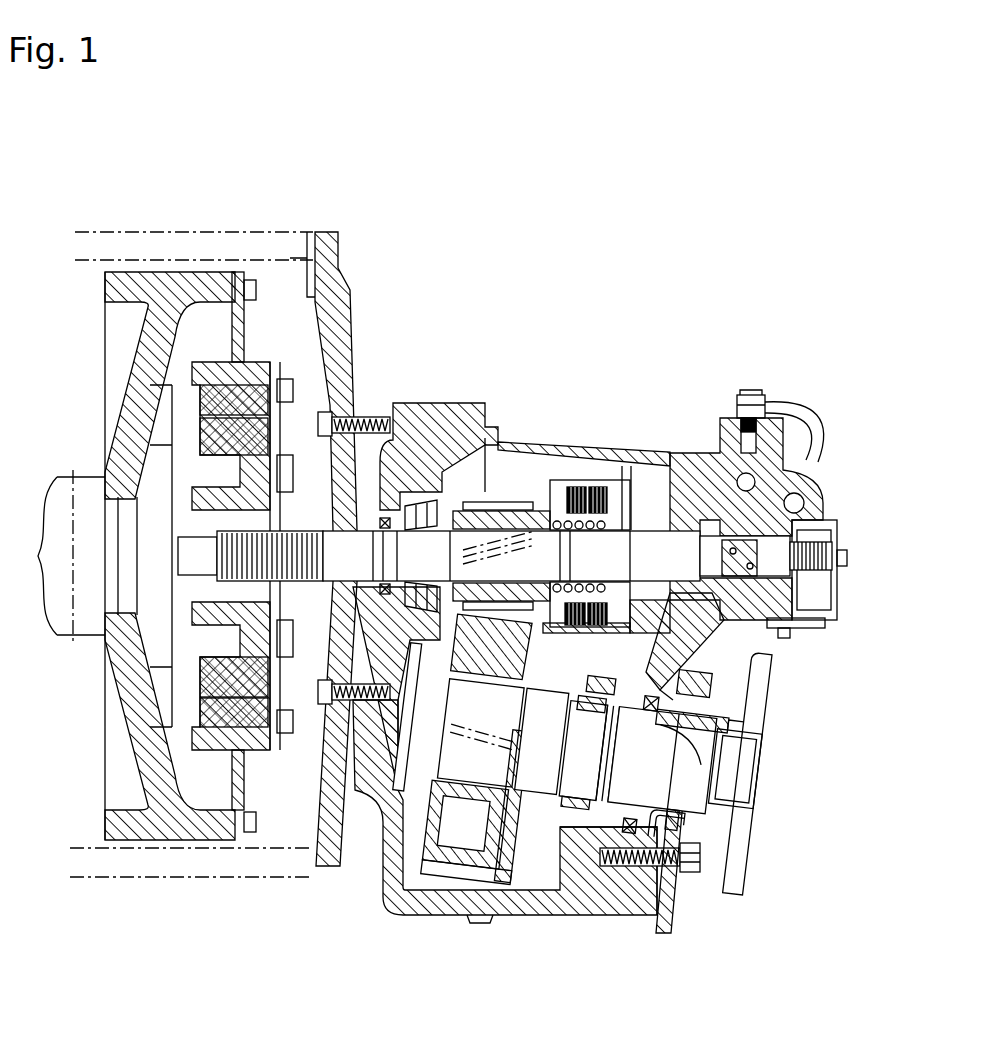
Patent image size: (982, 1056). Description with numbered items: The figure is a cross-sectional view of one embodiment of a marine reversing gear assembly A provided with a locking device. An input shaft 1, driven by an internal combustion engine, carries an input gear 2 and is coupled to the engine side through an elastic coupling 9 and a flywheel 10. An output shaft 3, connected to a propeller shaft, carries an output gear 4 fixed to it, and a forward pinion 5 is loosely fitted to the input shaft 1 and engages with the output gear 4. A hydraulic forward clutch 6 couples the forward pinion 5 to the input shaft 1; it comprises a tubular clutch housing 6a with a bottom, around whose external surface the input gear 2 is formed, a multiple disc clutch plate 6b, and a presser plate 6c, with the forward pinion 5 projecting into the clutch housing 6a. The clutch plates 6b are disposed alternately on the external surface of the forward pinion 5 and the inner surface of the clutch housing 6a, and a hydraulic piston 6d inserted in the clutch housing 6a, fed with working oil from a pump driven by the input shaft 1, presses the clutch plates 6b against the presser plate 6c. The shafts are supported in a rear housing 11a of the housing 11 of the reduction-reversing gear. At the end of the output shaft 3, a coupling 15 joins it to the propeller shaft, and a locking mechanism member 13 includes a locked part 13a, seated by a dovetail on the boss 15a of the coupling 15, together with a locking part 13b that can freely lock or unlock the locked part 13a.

The power unit A is at (396, 328).
The input shaft 1 is at (360, 570).
The input gear 2 is at (645, 470).
The output shaft 3 is at (653, 767).
The output gear 4 is at (453, 832).
The forward pinion 5 is at (515, 497).
The hydraulic forward clutch 6 is at (567, 497).
The clutch housing 6a is at (720, 628).
The multiple disc clutch plate 6b is at (598, 505).
The presser plate 6c is at (717, 645).
The hydraulic piston 6d is at (541, 618).
The elastic coupling 9 is at (263, 825).
The flywheel 10 is at (180, 838).
The housing 11 is at (448, 918).
The rear housing 11a is at (597, 880).
The locking mechanism member 13 is at (675, 915).
The locked part 13a is at (712, 722).
The locking part 13b is at (718, 683).
The coupling 15 is at (743, 840).
The boss 15a is at (710, 822).